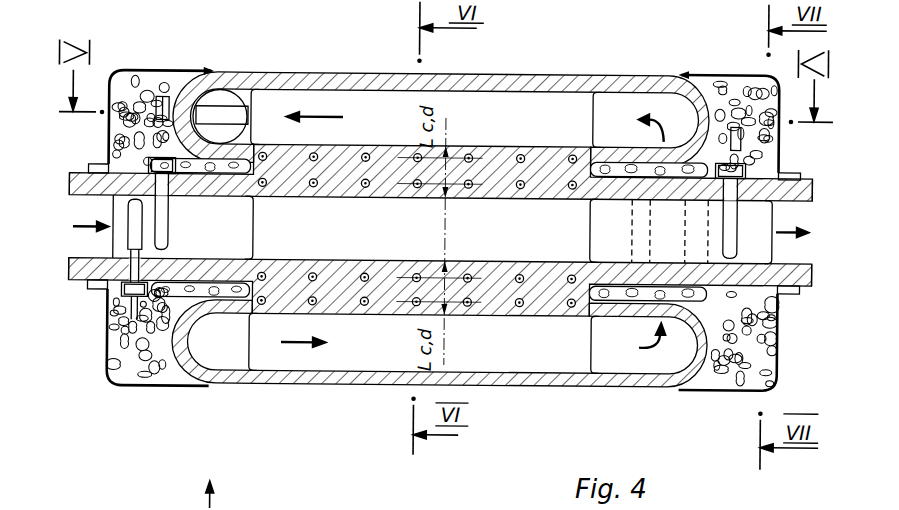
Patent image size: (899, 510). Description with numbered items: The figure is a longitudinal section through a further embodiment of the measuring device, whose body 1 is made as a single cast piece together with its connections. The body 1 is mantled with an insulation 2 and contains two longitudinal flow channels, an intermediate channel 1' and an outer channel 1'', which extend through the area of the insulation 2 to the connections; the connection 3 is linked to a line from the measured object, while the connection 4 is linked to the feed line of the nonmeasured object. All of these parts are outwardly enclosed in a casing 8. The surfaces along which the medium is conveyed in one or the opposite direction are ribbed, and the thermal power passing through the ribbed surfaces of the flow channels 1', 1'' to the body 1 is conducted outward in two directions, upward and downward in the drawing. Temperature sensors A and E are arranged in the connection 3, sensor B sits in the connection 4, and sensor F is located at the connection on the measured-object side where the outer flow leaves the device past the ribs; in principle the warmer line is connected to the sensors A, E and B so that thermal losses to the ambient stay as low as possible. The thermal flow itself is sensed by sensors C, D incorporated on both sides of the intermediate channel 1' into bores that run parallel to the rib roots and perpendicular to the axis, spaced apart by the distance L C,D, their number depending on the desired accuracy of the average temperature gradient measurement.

The body of the measuring device 1 is at (441, 209).
The intermediate longitudinal channel 1' is at (399, 258).
The outer longitudinal channel 1'' is at (440, 228).
The insulation 2 is at (150, 90).
The connection to the measured object 3 is at (90, 278).
The connection to the nonmeasured object 4 is at (806, 280).
The casing 8 is at (126, 81).
The sensor A is at (137, 224).
The sensor B is at (740, 197).
The thermal-flow sensor C is at (481, 165).
The thermal-flow sensor D is at (544, 168).
The sensor E is at (157, 215).
The sensor F is at (213, 115).